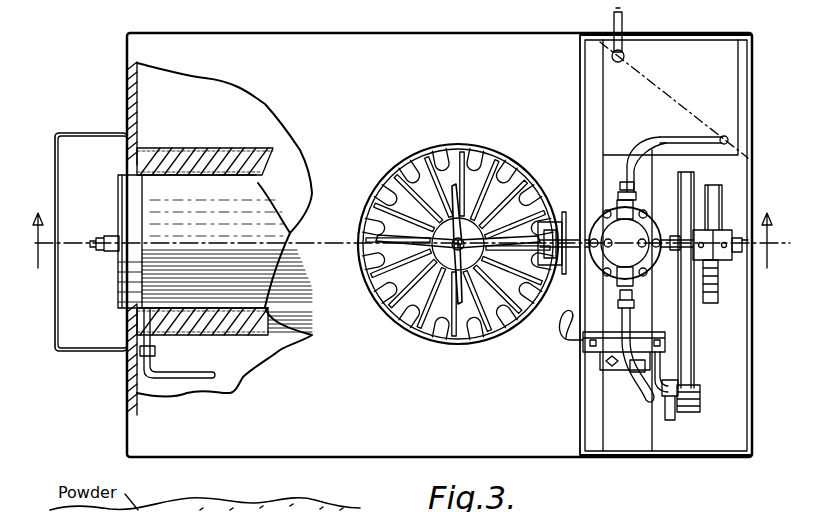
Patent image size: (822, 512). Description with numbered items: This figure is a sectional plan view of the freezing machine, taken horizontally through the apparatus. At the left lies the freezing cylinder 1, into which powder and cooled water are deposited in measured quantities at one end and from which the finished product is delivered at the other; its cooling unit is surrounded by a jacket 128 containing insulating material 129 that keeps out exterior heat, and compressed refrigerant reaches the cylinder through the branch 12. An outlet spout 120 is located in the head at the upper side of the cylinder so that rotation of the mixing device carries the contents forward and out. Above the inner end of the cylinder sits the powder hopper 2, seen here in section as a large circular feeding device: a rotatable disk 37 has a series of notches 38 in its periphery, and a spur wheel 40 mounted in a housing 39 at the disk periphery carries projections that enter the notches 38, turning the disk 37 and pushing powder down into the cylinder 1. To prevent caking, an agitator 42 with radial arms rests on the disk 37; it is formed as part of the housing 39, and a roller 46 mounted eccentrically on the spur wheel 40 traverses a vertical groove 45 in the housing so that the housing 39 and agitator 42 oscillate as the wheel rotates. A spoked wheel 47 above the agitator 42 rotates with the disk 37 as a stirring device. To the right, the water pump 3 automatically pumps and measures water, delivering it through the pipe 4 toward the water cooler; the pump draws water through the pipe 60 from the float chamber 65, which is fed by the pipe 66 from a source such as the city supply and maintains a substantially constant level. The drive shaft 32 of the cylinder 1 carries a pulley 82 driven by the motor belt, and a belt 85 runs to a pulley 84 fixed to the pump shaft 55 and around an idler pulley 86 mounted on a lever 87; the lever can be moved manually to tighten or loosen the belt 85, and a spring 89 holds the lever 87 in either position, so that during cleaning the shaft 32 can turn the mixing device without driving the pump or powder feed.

The freezing cylinder 1 is at (215, 253).
The hopper 2 is at (390, 184).
The water pump 3 is at (639, 243).
The pipe 4 is at (646, 422).
The branch 12 is at (587, 40).
The drive shaft 32 is at (738, 262).
The rotatable disk 37 is at (502, 182).
The notches 38 is at (472, 152).
The housing 39 is at (262, 511).
The spur wheel 40 is at (563, 230).
The agitator 42 is at (460, 318).
The vertical groove 45 is at (220, 511).
The roller 46 is at (542, 243).
The spoked wheel 47 is at (366, 228).
The pump shaft 55 is at (725, 238).
The pipe 60 is at (662, 143).
The float chamber 65 is at (674, 100).
The pipe 66 is at (622, 20).
The pulley 82 is at (720, 275).
The pulley 84 is at (703, 300).
The belt 85 is at (690, 338).
The idler pulley 86 is at (700, 394).
The lever 87 is at (562, 330).
The spring 89 is at (670, 396).
The outlet spout 120 is at (108, 238).
The jacket 128 is at (178, 165).
The insulating material 129 is at (212, 163).